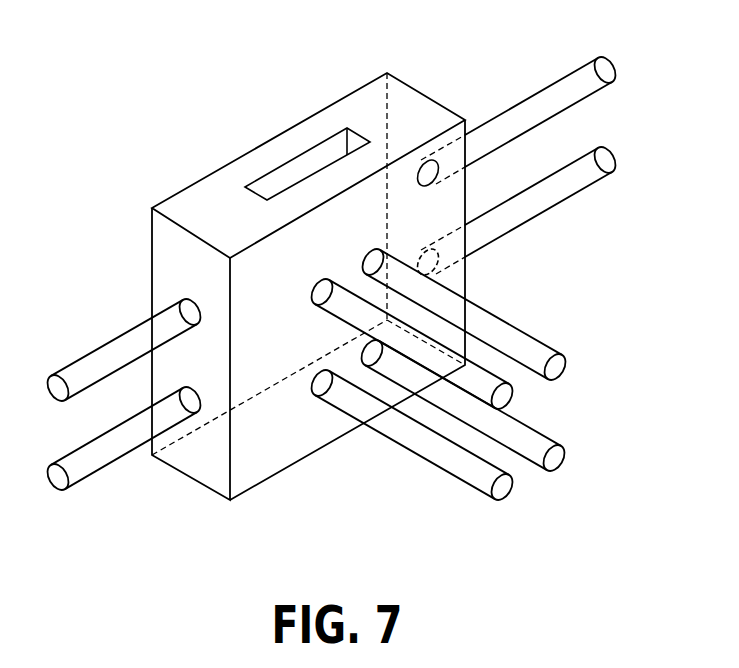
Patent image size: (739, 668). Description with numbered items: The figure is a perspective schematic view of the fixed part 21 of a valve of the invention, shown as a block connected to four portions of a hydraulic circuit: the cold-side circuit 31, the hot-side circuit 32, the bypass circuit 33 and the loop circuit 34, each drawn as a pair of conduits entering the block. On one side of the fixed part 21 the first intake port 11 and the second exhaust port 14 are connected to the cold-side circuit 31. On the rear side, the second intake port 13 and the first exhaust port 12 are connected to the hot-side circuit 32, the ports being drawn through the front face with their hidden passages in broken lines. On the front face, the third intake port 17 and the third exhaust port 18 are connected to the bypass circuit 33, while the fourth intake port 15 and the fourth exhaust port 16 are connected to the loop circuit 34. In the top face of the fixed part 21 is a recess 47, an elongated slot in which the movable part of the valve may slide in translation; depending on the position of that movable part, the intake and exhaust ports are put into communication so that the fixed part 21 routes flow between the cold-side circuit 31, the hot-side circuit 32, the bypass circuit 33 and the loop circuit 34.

The first intake port 11 is at (180, 303).
The first exhaust port 12 is at (430, 168).
The second intake port 13 is at (440, 265).
The second exhaust port 14 is at (190, 412).
The fourth intake port 15 is at (372, 258).
The fourth exhaust port 16 is at (374, 365).
The third intake port 17 is at (322, 390).
The third exhaust port 18 is at (320, 290).
The fixed part 21 is at (212, 188).
The cold-side circuit 31 is at (95, 360).
The hot-side circuit 32 is at (535, 103).
The bypass circuit 33 is at (482, 380).
The loop circuit 34 is at (505, 335).
The recess 47 is at (297, 168).